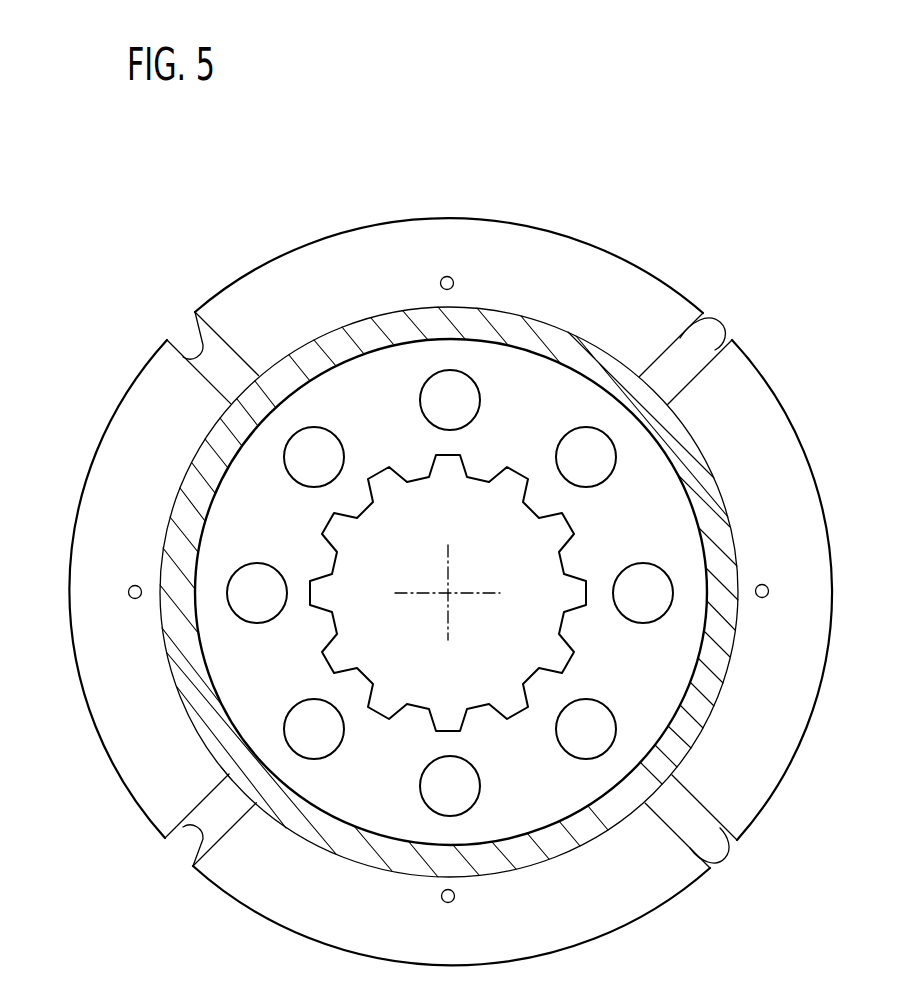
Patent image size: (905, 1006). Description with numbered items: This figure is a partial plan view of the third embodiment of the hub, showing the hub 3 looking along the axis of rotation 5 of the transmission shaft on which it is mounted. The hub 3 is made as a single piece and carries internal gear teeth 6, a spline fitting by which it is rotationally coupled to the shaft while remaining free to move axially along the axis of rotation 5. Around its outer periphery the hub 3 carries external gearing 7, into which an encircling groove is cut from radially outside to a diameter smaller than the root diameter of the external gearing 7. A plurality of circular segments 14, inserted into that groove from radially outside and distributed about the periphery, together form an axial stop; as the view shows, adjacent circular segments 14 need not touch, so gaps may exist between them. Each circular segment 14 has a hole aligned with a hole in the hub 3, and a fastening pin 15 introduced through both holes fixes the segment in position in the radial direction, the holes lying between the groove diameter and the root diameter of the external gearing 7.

The hub 3 is at (518, 144).
The axis of rotation 5 is at (449, 591).
The internal gear teeth 6 is at (558, 513).
The external gearing 7 is at (194, 323).
The circular segments 14 is at (277, 287).
The fastening pin 15 is at (441, 278).